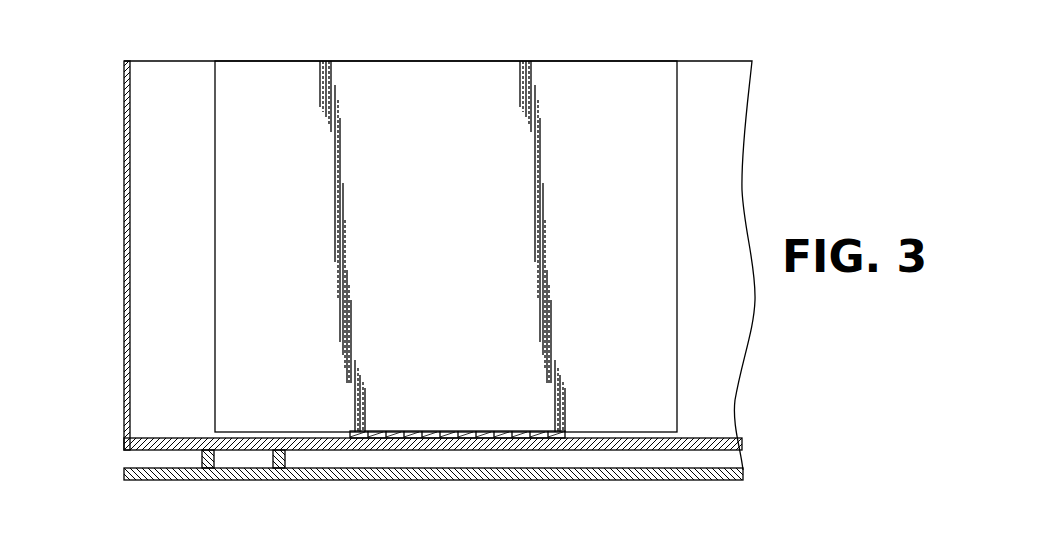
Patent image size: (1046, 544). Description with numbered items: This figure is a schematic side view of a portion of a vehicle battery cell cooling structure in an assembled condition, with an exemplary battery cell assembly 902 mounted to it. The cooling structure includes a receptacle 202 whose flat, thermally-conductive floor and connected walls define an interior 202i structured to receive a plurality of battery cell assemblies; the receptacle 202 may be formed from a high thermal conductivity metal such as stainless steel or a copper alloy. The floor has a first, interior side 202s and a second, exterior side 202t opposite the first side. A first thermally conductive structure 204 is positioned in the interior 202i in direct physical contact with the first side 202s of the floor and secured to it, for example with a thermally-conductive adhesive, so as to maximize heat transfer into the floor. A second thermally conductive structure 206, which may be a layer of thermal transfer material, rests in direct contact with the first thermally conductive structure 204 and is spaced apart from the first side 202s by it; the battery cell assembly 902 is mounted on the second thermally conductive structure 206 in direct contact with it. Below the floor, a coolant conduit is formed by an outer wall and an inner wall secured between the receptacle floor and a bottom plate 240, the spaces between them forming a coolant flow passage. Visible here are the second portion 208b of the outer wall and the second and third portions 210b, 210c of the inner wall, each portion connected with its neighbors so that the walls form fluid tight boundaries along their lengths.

The receptacle 202 is at (710, 61).
The interior of the receptacle 202i is at (175, 217).
The second (exterior) side of the floor 202t is at (178, 452).
The first (interior) side of the floor 202s is at (723, 440).
The first thermally conductive structure 204 is at (593, 440).
The second thermally conductive structure 206 is at (593, 432).
The second portion of the outer wall 208b is at (202, 458).
The second portion of the inner wall 210b is at (273, 458).
The third portion of the inner wall 210c is at (458, 460).
The bottom plate 240 is at (124, 475).
The battery cell assembly 902 is at (210, 113).